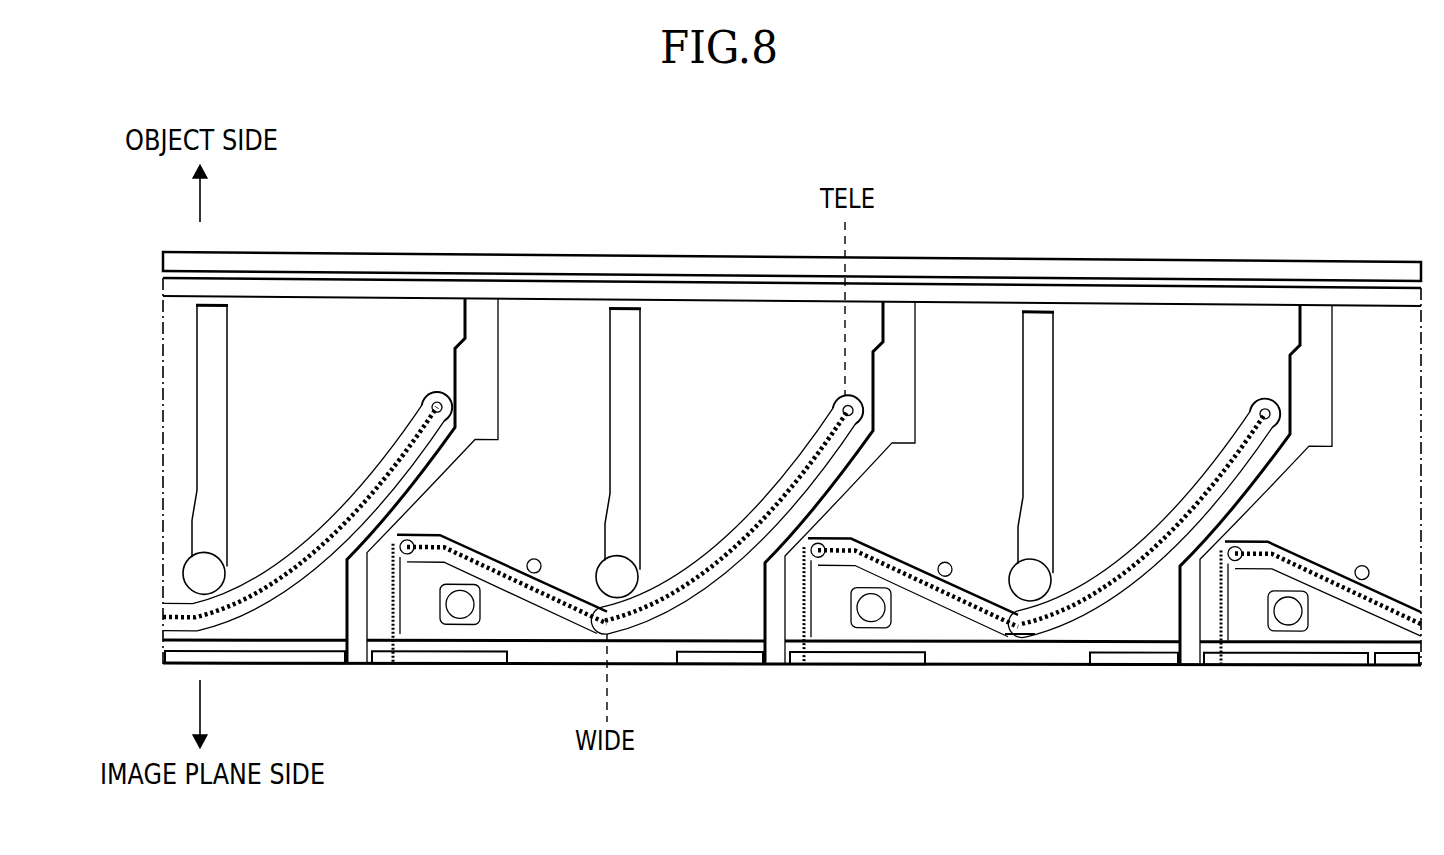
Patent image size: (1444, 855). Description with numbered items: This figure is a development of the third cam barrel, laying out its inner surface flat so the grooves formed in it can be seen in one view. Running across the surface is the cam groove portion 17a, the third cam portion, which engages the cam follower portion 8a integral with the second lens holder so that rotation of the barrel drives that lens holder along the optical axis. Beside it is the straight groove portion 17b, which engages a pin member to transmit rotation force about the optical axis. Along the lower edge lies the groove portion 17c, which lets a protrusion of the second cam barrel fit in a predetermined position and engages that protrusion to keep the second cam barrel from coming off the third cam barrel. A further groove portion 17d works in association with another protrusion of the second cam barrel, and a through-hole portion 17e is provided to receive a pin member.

The cam groove portion 17a is at (362, 492).
The straight groove portion 17b is at (222, 342).
The groove portion 17c is at (288, 658).
The groove portion 17d is at (497, 372).
The through-hole portion 17e is at (215, 562).
The cam follower portion 8a is at (1020, 641).